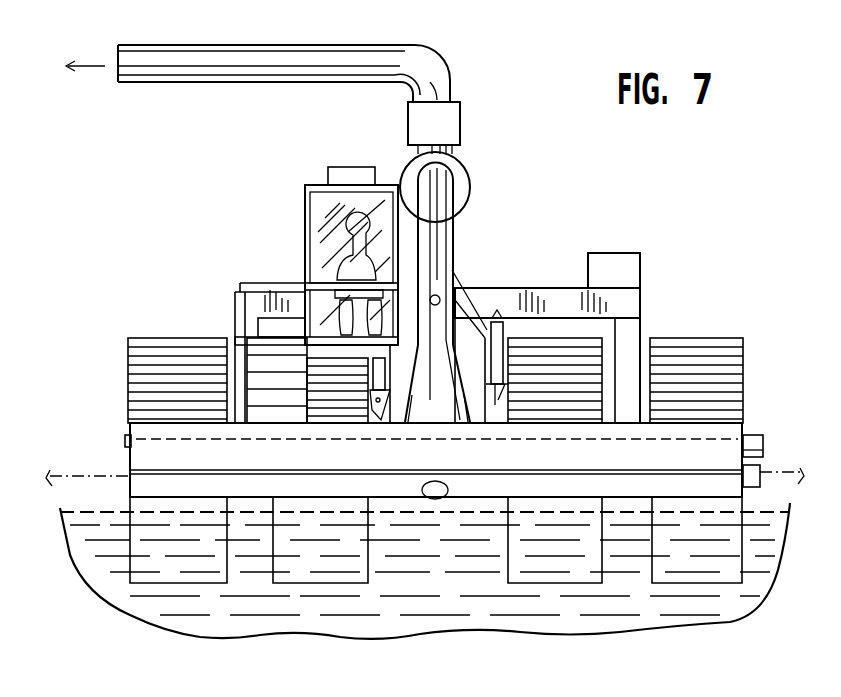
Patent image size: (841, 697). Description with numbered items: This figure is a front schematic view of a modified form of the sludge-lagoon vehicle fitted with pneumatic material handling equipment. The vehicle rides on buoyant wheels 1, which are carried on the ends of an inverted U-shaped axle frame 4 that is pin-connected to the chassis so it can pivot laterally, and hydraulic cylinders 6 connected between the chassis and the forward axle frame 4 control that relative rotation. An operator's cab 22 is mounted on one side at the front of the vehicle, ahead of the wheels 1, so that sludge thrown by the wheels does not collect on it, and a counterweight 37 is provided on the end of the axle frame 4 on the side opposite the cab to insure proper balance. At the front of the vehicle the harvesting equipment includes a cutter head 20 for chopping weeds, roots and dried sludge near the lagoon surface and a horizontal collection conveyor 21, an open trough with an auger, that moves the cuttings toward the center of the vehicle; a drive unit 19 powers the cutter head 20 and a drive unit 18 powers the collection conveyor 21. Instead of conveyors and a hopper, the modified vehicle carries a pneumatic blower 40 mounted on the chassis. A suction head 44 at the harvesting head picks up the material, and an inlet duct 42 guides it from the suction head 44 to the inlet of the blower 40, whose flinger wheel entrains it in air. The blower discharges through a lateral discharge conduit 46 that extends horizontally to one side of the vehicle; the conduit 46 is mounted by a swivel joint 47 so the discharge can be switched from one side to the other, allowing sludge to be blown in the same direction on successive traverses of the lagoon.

The buoyant wheels 1 is at (228, 568).
The axle frames 4 is at (642, 306).
The hydraulic cylinders 6 is at (385, 378).
The drive unit 18 is at (763, 470).
The drive unit 19 is at (760, 438).
The cutter head 20 is at (128, 452).
The horizontal collection conveyor 21 is at (130, 490).
The operator's cab 22 is at (302, 236).
The counterweight 37 is at (625, 253).
The pneumatic blower 40 is at (470, 176).
The inlet duct 42 is at (455, 275).
The suction head 44 is at (430, 405).
The lateral discharge conduit 46 is at (335, 52).
The swivel joint 47 is at (458, 122).